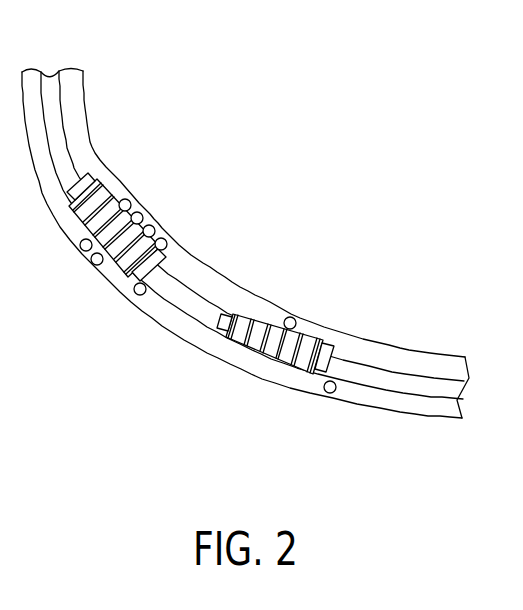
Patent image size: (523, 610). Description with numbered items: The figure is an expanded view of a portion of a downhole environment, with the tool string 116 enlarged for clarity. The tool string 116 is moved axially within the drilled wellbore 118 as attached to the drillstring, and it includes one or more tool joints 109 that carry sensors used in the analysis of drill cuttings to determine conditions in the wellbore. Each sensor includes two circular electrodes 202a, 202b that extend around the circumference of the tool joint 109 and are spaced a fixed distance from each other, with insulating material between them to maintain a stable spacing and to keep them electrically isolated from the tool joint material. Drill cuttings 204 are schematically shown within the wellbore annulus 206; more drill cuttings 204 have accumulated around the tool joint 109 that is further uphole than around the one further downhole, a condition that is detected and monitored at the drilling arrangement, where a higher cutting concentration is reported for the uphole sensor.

The tool string 116 is at (245, 241).
The drilled wellbore 118 is at (252, 292).
The wellbore annulus 206 is at (73, 88).
The tool joint 109 is at (203, 288).
The drill cuttings 204 is at (150, 227).
The first electrode 202a is at (262, 352).
The second electrode 202b is at (288, 365).